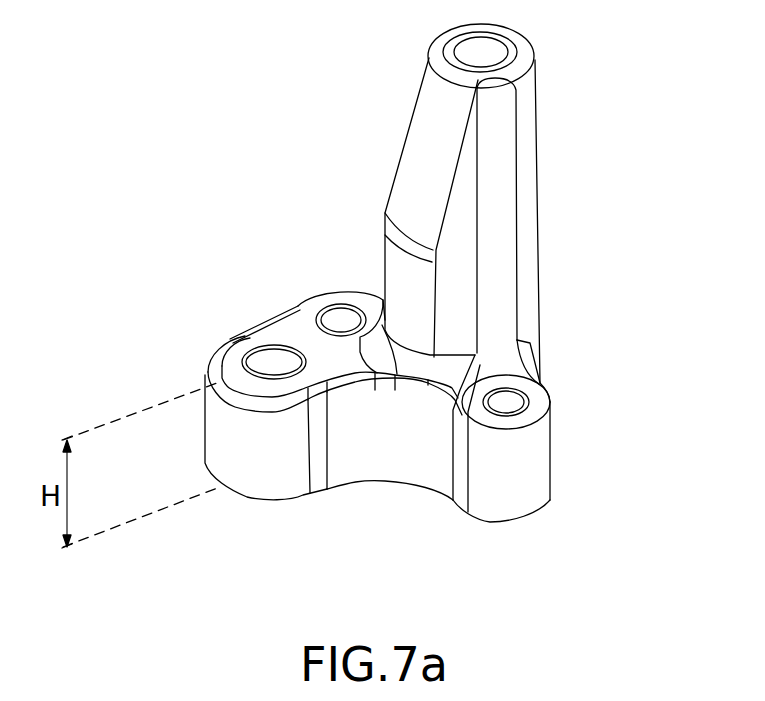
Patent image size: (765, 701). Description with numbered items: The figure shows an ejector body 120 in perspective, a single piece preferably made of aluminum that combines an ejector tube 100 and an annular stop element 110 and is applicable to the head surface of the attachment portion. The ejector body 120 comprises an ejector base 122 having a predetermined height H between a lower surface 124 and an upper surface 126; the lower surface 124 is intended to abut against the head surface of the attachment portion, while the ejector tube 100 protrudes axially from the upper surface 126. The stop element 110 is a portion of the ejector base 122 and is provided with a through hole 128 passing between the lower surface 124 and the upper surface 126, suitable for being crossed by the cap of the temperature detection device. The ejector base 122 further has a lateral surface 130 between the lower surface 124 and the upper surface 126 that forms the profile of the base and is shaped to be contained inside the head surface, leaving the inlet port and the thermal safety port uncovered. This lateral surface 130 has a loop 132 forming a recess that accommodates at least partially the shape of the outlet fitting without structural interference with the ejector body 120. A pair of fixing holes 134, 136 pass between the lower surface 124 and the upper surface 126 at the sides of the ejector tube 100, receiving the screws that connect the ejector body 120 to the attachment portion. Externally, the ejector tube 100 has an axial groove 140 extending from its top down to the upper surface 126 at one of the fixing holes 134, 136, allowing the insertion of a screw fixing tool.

The ejector tube 100 is at (603, 506).
The stop element 110 is at (257, 326).
The ejector body 120 is at (665, 91).
The ejector base 122 is at (258, 456).
The lower surface 124 is at (446, 503).
The upper surface 126 is at (298, 334).
The through hole 128 is at (262, 360).
The lateral surface 130 is at (511, 494).
The loop 132 is at (396, 444).
The fixing hole 134 is at (342, 316).
The fixing hole 136 is at (509, 407).
The axial groove 140 is at (493, 170).